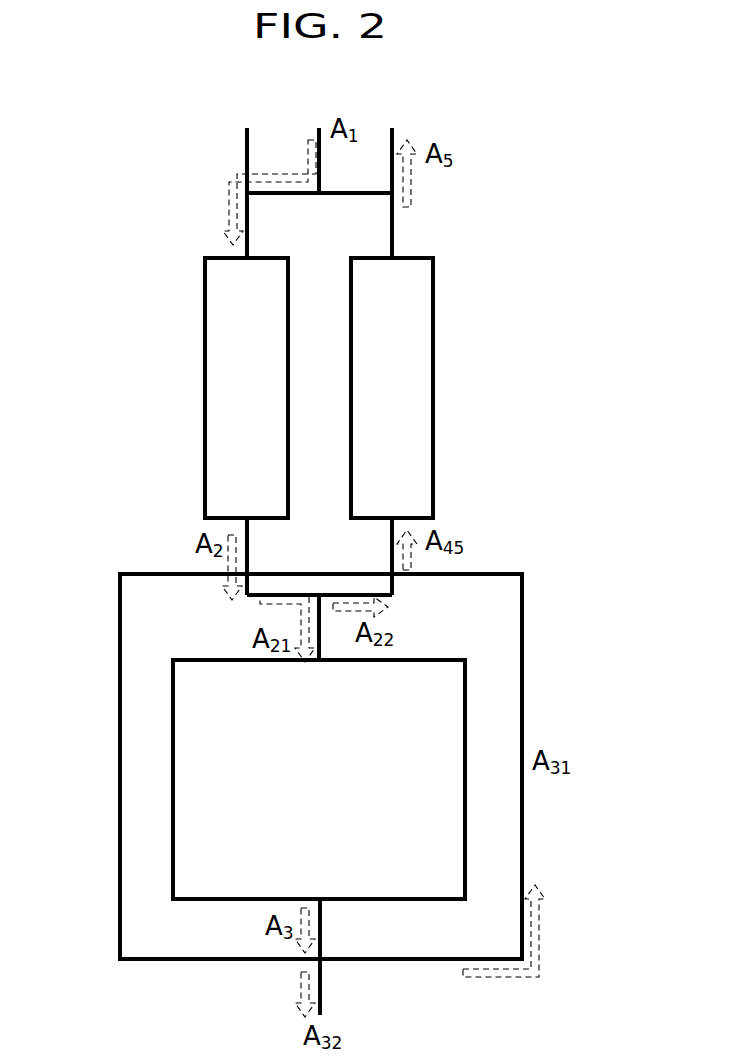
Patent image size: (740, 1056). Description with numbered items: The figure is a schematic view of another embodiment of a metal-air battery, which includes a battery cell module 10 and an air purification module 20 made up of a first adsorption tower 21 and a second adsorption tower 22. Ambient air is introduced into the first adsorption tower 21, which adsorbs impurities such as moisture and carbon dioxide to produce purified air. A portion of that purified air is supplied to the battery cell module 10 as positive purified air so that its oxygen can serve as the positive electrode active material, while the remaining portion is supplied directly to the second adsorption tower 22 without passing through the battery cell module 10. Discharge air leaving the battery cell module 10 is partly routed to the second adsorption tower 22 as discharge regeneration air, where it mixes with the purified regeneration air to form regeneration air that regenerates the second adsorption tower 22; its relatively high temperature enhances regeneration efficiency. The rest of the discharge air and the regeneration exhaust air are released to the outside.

The battery cell module 10 is at (160, 778).
The air purification module 20 is at (399, 388).
The first adsorption tower 21 is at (306, 455).
The second adsorption tower 22 is at (543, 428).